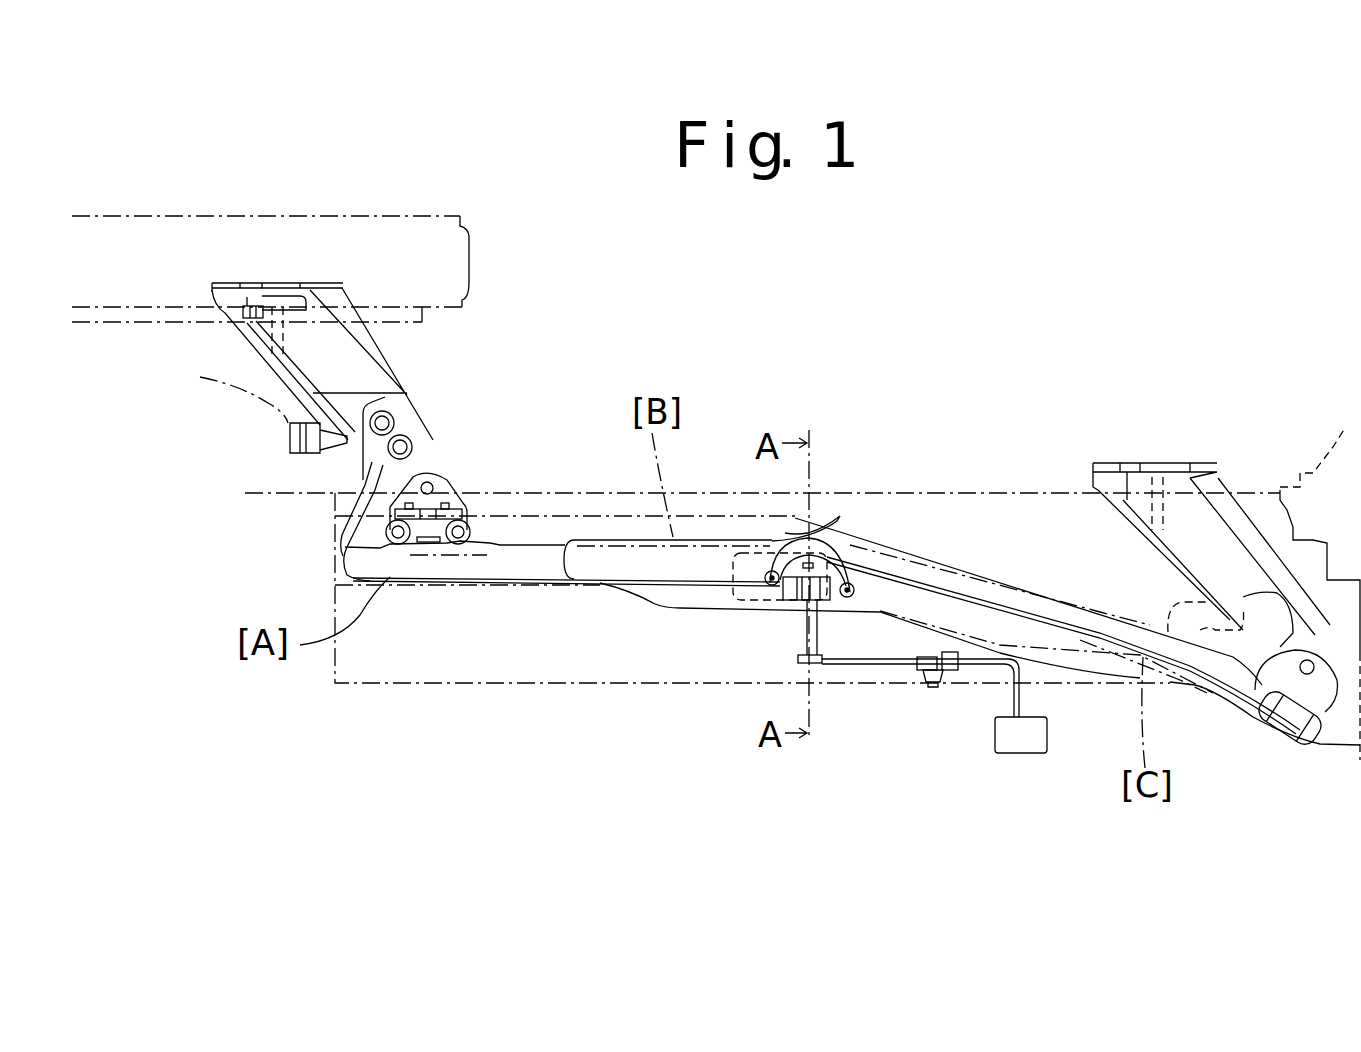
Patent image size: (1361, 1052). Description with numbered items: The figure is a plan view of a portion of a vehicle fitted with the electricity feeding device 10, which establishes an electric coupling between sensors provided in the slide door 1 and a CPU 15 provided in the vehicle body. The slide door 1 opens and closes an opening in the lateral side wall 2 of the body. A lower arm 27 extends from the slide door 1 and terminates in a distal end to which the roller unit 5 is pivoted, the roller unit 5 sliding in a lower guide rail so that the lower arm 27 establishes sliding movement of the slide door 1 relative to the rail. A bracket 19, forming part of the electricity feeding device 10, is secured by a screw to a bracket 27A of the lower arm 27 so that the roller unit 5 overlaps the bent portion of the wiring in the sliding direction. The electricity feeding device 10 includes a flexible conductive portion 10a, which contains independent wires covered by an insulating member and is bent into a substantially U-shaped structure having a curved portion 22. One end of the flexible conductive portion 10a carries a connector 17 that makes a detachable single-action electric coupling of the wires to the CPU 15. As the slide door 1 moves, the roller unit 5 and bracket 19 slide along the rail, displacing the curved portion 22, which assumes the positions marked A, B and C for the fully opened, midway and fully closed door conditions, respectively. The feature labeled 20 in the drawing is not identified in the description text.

The slide door 1 is at (222, 228).
The lateral side wall 2 is at (596, 662).
The roller unit 5 is at (443, 486).
The electricity feeding device 10 is at (517, 618).
The flexible conductive portion 10a is at (430, 580).
The CPU 15 is at (1028, 743).
The connector 17 is at (953, 670).
The bracket 19 is at (367, 468).
The mounting bracket 20 is at (793, 598).
The curved portion 22 is at (342, 562).
The lower arm 27 is at (380, 357).
The bracket 27A is at (402, 430).